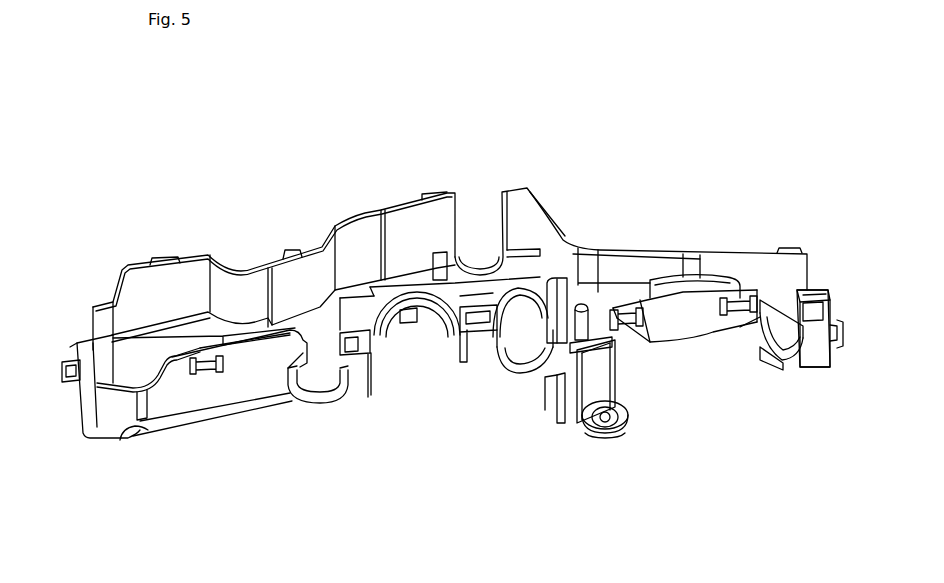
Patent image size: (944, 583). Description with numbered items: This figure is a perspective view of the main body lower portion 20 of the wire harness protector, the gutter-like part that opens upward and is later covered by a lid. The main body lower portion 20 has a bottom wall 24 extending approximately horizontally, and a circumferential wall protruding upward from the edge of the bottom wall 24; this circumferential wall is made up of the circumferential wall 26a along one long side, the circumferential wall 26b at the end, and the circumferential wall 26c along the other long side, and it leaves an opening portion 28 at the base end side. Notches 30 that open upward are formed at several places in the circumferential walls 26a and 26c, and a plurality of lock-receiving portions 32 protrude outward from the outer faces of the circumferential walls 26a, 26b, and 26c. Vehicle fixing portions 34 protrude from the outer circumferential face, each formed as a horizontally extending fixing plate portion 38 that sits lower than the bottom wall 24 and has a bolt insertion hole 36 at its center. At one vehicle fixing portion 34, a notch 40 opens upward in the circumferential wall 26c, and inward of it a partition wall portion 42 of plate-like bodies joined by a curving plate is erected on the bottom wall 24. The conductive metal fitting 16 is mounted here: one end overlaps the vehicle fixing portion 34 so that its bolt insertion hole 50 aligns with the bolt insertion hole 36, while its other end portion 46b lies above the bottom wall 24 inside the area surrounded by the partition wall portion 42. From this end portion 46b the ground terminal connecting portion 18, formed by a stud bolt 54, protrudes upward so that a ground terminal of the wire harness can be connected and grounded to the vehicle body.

The conductive metal fitting 16 is at (603, 366).
The ground terminal connecting portion 18 is at (598, 298).
The main body lower portion 20 is at (805, 165).
The bottom wall 24 is at (358, 308).
The circumferential wall 26a is at (403, 235).
The circumferential wall 26b is at (80, 393).
The circumferential wall 26c is at (267, 380).
The opening portion 28 is at (810, 288).
The notch 30 is at (455, 230).
The lock-receiving portion 32 is at (168, 256).
The vehicle fixing portion 34 is at (634, 442).
The bolt insertion hole 36 is at (590, 417).
The fixing plate portion 38 is at (612, 433).
The notch 40 is at (568, 333).
The partition wall portion 42 is at (563, 288).
The end portion 46b is at (596, 348).
The bolt insertion hole 50 is at (600, 430).
The stud bolt 54 is at (591, 328).